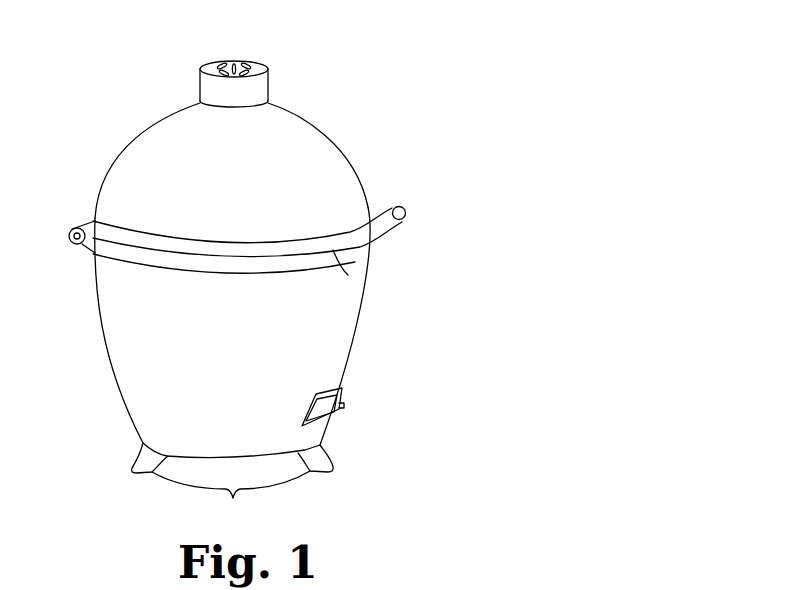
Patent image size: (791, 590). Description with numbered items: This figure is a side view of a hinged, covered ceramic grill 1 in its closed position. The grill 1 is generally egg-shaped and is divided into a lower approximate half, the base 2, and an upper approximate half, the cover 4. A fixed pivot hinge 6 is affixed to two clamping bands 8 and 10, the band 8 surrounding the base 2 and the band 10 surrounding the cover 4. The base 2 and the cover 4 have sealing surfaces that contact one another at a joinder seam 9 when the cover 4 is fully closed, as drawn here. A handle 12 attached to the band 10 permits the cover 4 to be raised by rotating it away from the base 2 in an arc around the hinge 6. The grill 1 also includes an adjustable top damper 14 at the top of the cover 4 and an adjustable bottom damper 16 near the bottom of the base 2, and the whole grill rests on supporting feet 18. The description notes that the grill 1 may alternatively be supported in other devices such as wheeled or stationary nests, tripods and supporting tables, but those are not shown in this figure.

The hinged, covered ceramic grill 1 is at (365, 67).
The base 2 is at (348, 318).
The cover 4 is at (328, 150).
The fixed pivot hinge 6 is at (73, 243).
The clamping band 8 is at (355, 253).
The joinder seam 9 is at (348, 275).
The clamping band 10 is at (353, 233).
The handle 12 is at (403, 220).
The adjustable top damper 14 is at (262, 88).
The adjustable bottom damper 16 is at (328, 412).
The supporting feet 18 is at (233, 487).